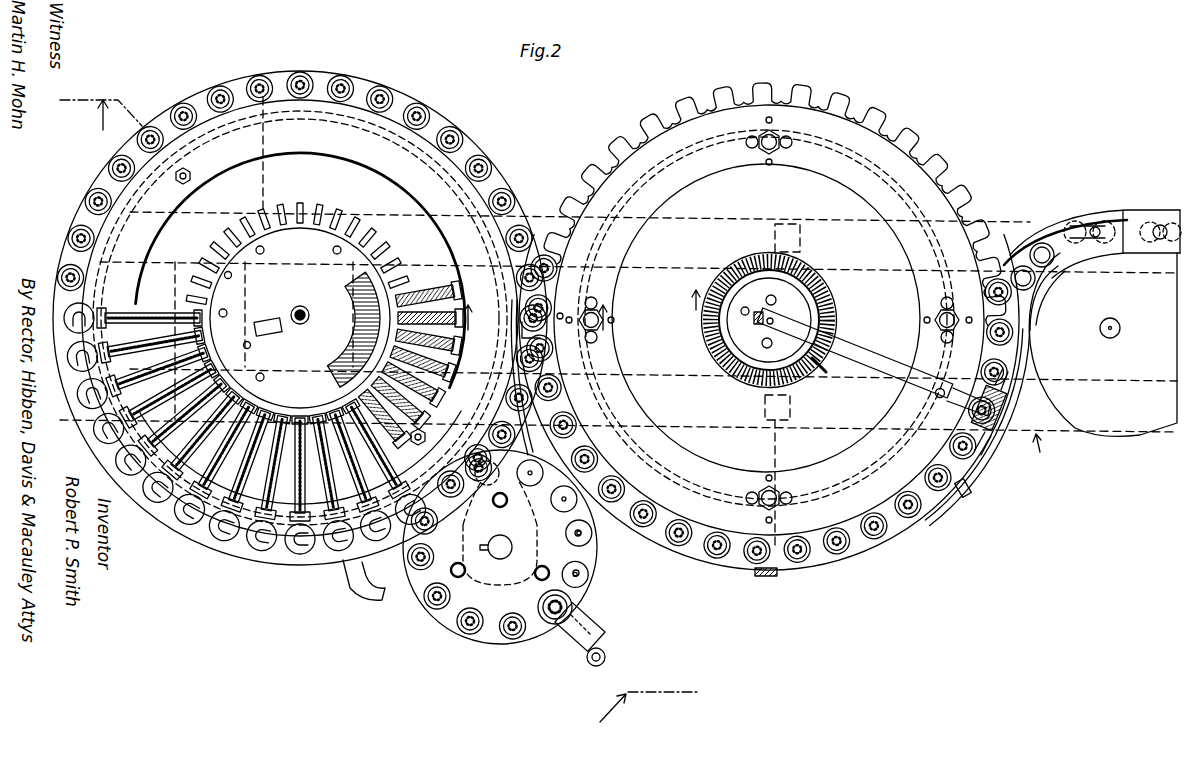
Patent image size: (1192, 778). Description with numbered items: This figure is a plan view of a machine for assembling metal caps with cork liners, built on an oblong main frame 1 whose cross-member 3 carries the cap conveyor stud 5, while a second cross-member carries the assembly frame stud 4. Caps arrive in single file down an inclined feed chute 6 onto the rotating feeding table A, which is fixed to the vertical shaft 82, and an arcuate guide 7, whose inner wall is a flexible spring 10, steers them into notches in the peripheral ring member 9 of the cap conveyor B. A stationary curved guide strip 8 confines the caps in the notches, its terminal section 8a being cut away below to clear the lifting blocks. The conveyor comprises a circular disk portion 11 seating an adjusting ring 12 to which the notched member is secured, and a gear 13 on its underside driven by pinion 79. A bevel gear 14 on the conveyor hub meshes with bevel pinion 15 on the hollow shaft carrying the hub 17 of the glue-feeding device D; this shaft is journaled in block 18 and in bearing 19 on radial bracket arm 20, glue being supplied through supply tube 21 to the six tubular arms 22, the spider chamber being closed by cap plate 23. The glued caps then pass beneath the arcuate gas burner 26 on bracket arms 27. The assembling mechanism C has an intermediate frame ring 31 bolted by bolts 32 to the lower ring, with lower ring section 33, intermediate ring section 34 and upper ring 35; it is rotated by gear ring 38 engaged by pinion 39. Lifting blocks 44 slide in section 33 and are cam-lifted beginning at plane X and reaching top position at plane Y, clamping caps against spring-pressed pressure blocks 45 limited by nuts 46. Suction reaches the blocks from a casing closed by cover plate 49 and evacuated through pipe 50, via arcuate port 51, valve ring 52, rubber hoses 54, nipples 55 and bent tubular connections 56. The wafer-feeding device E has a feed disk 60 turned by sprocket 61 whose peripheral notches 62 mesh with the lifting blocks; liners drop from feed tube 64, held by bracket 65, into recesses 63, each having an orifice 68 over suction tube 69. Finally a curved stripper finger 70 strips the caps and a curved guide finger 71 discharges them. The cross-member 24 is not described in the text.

The main frame 1 is at (732, 428).
The cross-member 3 is at (380, 399).
The assembly frame stud 4 is at (687, 300).
The cap conveyor stud 5 is at (535, 319).
The inclined feed chute 6 is at (1150, 220).
The arcuate guide 7 is at (1042, 232).
The curved guide strip 8 is at (866, 552).
The terminal section 8a is at (512, 360).
The peripheral ring member 9 is at (852, 108).
The flexible spring 10 is at (1046, 305).
The circular disk portion 11 is at (766, 318).
The adjusting ring 12 is at (766, 318).
The gear 13 is at (898, 522).
The bevel gear 14 is at (750, 270).
The bevel pinion 15 is at (822, 372).
The hub of the spider 17 is at (985, 392).
The block 18 is at (798, 316).
The bearing 19 is at (938, 400).
The radial bracket arm 20 is at (874, 362).
The supply tube 21 is at (742, 315).
The tubular arms 22 is at (1002, 394).
The cap plate 23 is at (1003, 422).
The section arrow 24 is at (1048, 452).
The arcuate gas burner 26 is at (745, 505).
The bracket arms 27 is at (766, 578).
The intermediate frame ring 31 is at (150, 240).
The bolts 32 is at (190, 180).
The lower ring section 33 is at (63, 252).
The intermediate ring section 34 is at (50, 298).
The upper ring 35 is at (145, 508).
The gear ring 38 is at (478, 228).
The pinion 39 is at (500, 298).
The lifting blocks 44 is at (412, 485).
The pressure blocks 45 is at (100, 455).
The nuts 46 is at (178, 500).
The cover plate 49 is at (338, 240).
The pipe 50 is at (307, 306).
The arcuate port 51 is at (340, 349).
The valve ring 52 is at (356, 314).
The rubber hose 54 is at (166, 355).
The nipple 55 is at (415, 300).
The bent tubular connection 56 is at (240, 540).
The feed disk 60 is at (450, 558).
The sprocket 61 is at (508, 634).
The peripheral notches 62 is at (437, 608).
The recesses 63 is at (422, 568).
The feed tube 64 is at (572, 606).
The bracket 65 is at (596, 640).
The orifice 68 is at (580, 538).
The suction tube 69 is at (587, 660).
The curved stripper finger 70 is at (263, 556).
The curved guide finger 71 is at (320, 585).
The pinion 79 is at (950, 310).
The vertical shaft 82 is at (1120, 328).
The feeding table A is at (1133, 420).
The cap conveyor B is at (943, 147).
The assembling mechanism C is at (496, 124).
The glue-feeding device D is at (990, 442).
The wafer-feeding device E is at (529, 653).
The radial plane x X is at (540, 336).
The radial plane y Y is at (564, 301).